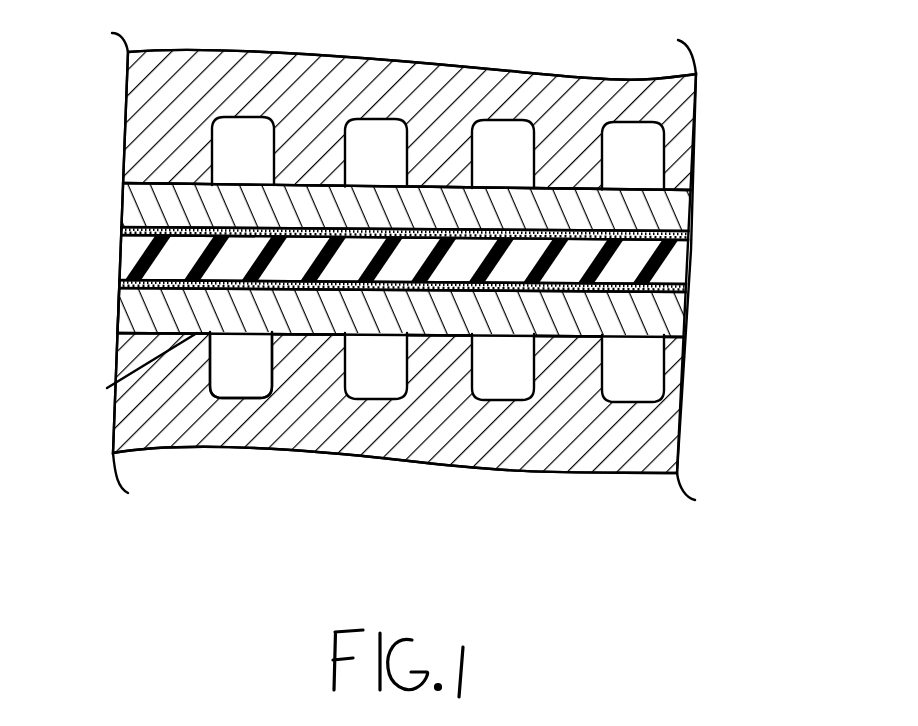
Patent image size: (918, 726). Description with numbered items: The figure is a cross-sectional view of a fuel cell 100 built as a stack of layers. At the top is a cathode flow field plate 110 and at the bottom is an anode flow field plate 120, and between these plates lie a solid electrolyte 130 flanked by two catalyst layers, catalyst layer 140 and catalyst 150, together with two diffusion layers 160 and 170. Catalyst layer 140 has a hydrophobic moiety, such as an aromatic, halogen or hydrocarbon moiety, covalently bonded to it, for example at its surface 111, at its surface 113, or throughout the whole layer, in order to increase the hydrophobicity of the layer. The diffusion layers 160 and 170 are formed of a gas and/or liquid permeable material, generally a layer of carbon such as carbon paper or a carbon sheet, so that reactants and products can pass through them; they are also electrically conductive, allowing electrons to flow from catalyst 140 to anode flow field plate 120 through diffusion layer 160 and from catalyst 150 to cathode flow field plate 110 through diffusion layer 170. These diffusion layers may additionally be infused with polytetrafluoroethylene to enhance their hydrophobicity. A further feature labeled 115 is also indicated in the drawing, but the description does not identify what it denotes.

The fuel cell 100 is at (650, 536).
The cathode flow field plate 110 is at (440, 113).
The surface 111 is at (147, 253).
The surface 113 is at (117, 307).
The recess 115 is at (250, 336).
The anode flow field plate 120 is at (465, 415).
The solid electrolyte 130 is at (668, 272).
The catalyst layer 140 is at (687, 290).
The catalyst 150 is at (695, 231).
The diffusion layer 160 is at (680, 338).
The diffusion layer 170 is at (695, 188).